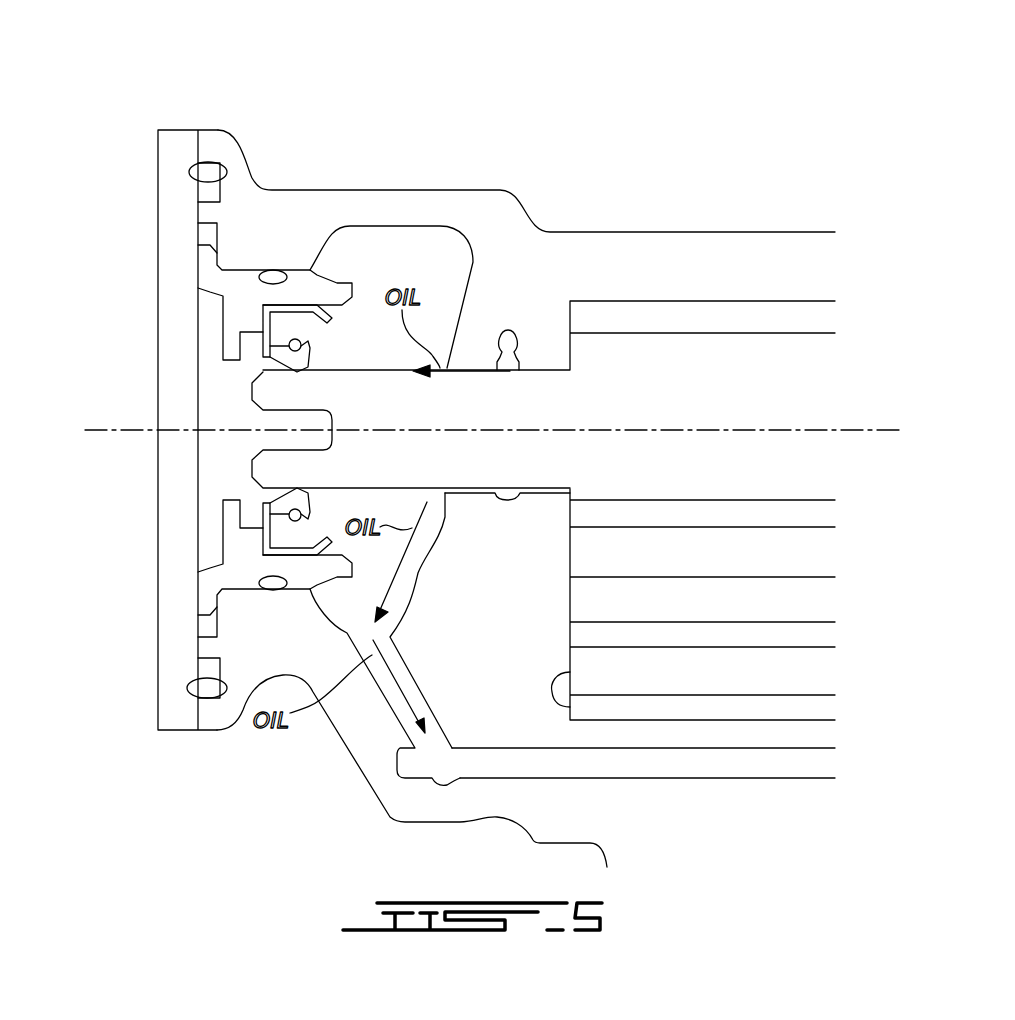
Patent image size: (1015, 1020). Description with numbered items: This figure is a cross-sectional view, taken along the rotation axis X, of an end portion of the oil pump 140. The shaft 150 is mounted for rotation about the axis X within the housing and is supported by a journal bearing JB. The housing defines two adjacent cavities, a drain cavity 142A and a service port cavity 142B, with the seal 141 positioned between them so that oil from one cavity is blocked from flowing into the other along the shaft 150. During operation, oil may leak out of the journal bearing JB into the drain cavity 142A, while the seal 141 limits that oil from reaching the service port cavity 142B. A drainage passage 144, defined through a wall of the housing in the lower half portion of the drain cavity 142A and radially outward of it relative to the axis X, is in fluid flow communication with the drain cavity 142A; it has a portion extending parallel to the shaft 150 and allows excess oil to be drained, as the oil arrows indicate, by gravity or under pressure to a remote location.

The pump 140 is at (893, 193).
The seal 141 is at (263, 307).
The drain cavity 142A is at (375, 243).
The service port cavity 142B is at (213, 391).
The drainage passage 144 is at (383, 697).
The shaft 150 is at (560, 402).
The journal bearing JB is at (538, 370).
The rotation axis X is at (880, 430).